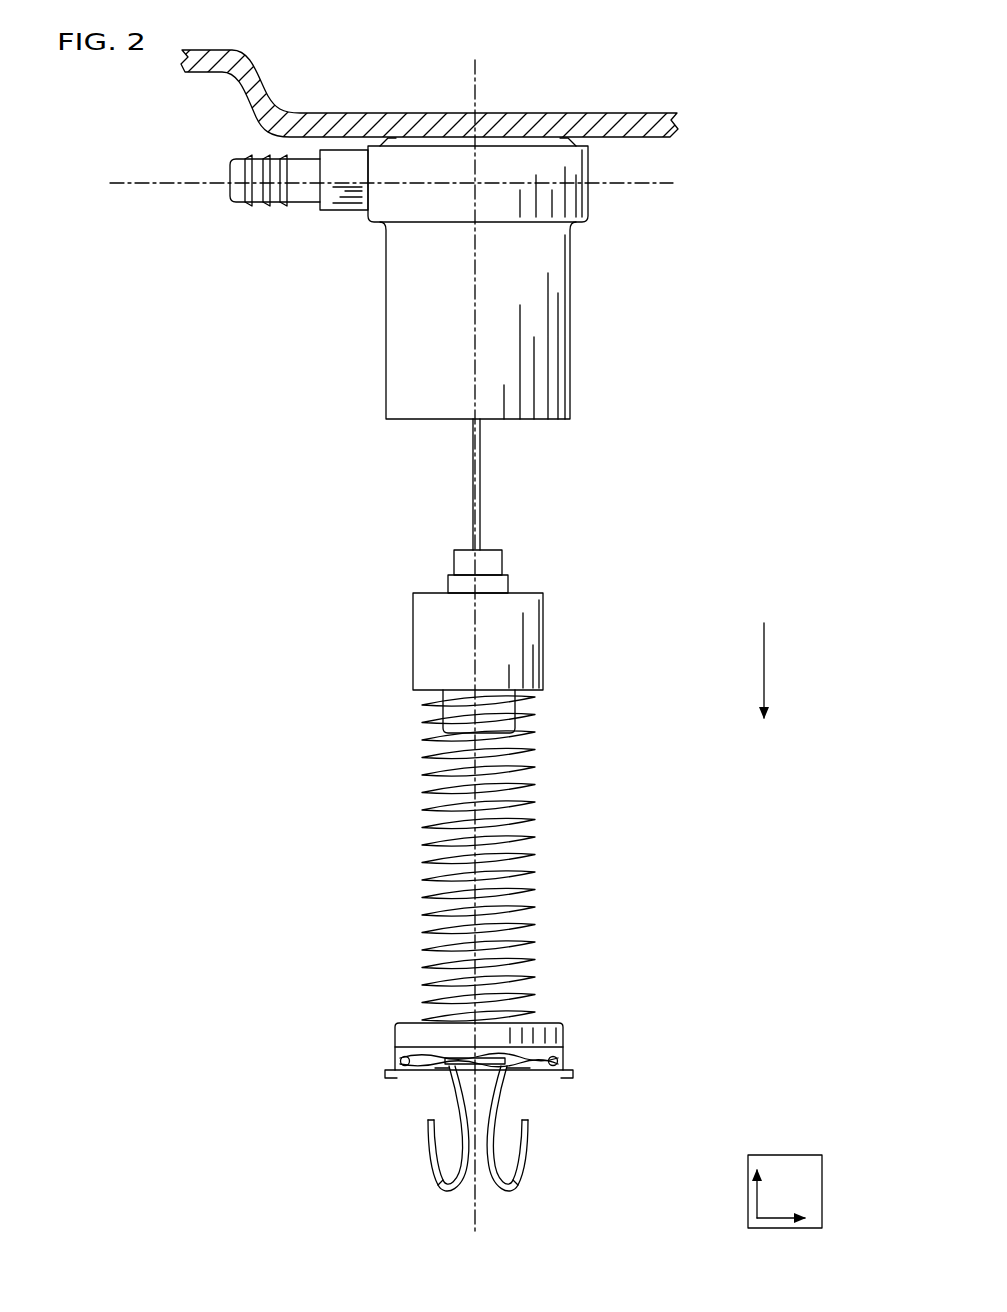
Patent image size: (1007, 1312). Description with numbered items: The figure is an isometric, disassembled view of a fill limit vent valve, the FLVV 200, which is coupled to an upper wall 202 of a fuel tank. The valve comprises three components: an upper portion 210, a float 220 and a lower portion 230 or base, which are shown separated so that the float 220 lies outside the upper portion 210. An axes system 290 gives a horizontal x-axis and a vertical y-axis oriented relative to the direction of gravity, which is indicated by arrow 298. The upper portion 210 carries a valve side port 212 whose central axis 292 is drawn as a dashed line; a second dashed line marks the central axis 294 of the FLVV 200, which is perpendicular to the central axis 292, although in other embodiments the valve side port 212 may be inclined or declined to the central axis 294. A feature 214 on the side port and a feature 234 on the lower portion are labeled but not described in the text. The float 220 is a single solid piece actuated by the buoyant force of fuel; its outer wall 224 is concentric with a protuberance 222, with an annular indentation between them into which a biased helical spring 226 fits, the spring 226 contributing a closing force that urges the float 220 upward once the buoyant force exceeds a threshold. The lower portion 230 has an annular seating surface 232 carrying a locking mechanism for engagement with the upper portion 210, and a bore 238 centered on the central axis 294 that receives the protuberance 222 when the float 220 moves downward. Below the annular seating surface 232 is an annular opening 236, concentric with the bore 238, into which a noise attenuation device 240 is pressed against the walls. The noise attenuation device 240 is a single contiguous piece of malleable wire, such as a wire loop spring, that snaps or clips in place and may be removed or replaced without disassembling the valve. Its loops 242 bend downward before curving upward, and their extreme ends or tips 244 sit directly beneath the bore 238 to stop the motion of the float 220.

The FLVV 200 is at (758, 44).
The upper wall 202 is at (598, 112).
The upper portion 210 is at (636, 257).
The valve side port 212 is at (260, 234).
The barbed fitting 214 is at (230, 168).
The float 220 is at (643, 636).
The protuberance 222 is at (428, 730).
The outer wall 224 is at (413, 625).
The spring 226 is at (530, 903).
The lower portion 230 is at (636, 1036).
The annular seating surface 232 is at (546, 1024).
The flange 234 is at (385, 1077).
The annular opening 236 is at (432, 1080).
The bore 238 is at (447, 1057).
The noise attenuation device 240 is at (618, 1138).
The loops 242 is at (455, 1207).
The extreme ends 244 is at (430, 1120).
The axes system 290 is at (777, 1155).
The central axis 292 is at (114, 182).
The central axis 294 is at (478, 90).
The arrow 298 is at (766, 668).